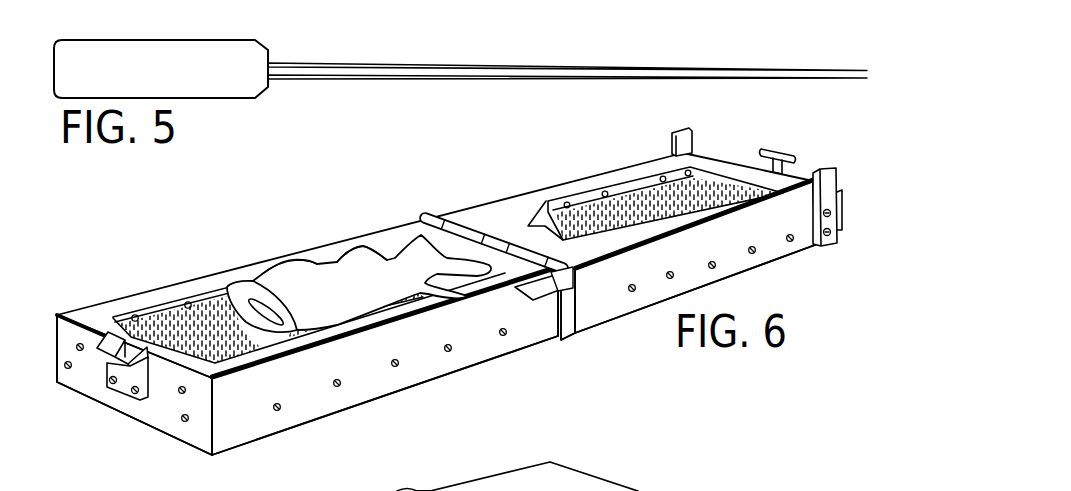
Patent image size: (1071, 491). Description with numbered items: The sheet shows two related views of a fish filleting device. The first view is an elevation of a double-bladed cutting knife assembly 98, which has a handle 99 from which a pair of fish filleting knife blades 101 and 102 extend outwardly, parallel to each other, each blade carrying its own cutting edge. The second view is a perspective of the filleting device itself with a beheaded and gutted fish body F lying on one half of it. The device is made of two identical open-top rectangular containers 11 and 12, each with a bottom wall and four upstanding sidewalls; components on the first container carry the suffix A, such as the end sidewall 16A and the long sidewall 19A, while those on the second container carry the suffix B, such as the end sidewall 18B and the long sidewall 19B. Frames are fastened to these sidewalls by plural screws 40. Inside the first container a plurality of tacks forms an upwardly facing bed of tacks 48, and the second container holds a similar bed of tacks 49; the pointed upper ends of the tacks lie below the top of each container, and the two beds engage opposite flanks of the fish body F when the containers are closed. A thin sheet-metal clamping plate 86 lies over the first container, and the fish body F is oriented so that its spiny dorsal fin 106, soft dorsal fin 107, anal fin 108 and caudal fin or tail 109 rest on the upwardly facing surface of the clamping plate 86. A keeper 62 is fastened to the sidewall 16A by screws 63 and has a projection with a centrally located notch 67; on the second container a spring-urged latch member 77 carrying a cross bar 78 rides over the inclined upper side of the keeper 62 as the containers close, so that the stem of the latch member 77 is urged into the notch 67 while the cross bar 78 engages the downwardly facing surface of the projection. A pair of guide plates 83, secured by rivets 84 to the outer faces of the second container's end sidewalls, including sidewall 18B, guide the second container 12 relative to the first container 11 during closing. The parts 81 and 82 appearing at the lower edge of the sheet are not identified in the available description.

In FIG. 5, the cutting knife assembly 98 is at (460, 56).
In FIG. 5, the handle 99 is at (183, 55).
In FIG. 5, the fish filleting knife blade 101 is at (407, 63).
In FIG. 5, the fish filleting knife blade 102 is at (407, 78).
In FIG. 6, the open top container 11 is at (365, 321).
In FIG. 6, the open top container 12 is at (703, 242).
In FIG. 6, the sidewall 16A is at (170, 417).
In FIG. 6, the sidewall 18B is at (566, 320).
In FIG. 6, the sidewall 19A is at (291, 392).
In FIG. 6, the sidewall 19B is at (728, 263).
In FIG. 6, the screws 40 is at (395, 366).
In FIG. 6, the bed of tacks 48 is at (203, 326).
In FIG. 6, the bed of tacks 49 is at (637, 207).
In FIG. 6, the keeper 62 is at (128, 382).
In FIG. 6, the screws 63 is at (109, 382).
In FIG. 6, the notch 67 is at (125, 340).
In FIG. 6, the latch member 77 is at (770, 168).
In FIG. 6, the cross bar 78 is at (783, 155).
In FIG. 6, the cover 81 is at (457, 471).
In FIG. 6, the cover edge 82 is at (386, 488).
In FIG. 6, the guide plates 83 is at (687, 142).
In FIG. 6, the rivets 84 is at (833, 232).
In FIG. 6, the clamping plate 86 is at (153, 298).
In FIG. 6, the spiny dorsal fin 106 is at (290, 262).
In FIG. 6, the soft dorsal fin 107 is at (358, 247).
In FIG. 6, the anal fin 108 is at (447, 290).
In FIG. 6, the caudal fin 109 is at (423, 240).
In FIG. 6, the fish body F is at (359, 262).